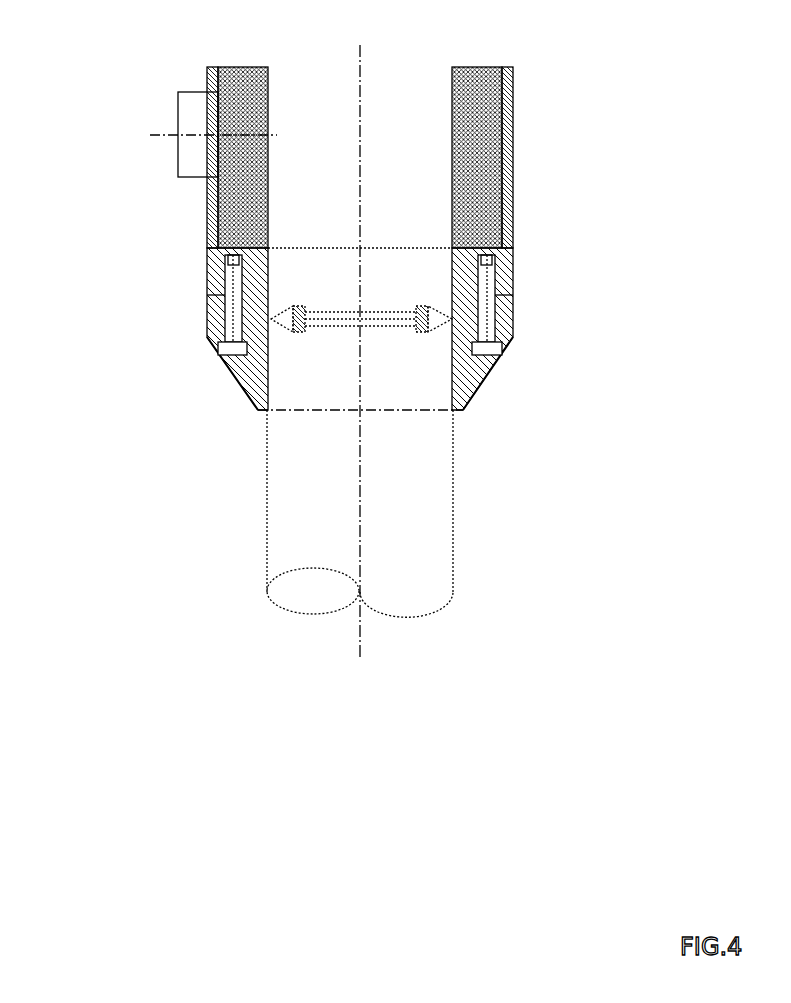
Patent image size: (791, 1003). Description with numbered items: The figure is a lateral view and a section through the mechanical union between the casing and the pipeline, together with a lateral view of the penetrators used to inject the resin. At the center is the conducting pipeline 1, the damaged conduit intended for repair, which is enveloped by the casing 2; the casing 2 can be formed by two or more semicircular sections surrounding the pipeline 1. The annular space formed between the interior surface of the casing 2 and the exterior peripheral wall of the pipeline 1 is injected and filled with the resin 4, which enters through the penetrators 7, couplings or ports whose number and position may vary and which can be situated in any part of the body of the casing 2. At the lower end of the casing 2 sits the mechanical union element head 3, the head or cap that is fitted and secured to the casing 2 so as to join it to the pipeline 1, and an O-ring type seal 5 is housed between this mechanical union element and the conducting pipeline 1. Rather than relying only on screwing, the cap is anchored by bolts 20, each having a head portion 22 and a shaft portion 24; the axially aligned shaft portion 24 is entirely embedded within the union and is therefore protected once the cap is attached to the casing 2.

The conducting pipeline 1 is at (453, 497).
The casing 2 is at (513, 128).
The mechanical union element head 3 is at (513, 335).
The resin 4 is at (498, 200).
The O-ring type seal 5 is at (207, 338).
The penetrators 7 is at (177, 133).
The bolts 20 is at (207, 258).
The head portion 22 is at (243, 357).
The shaft portion 24 is at (207, 295).